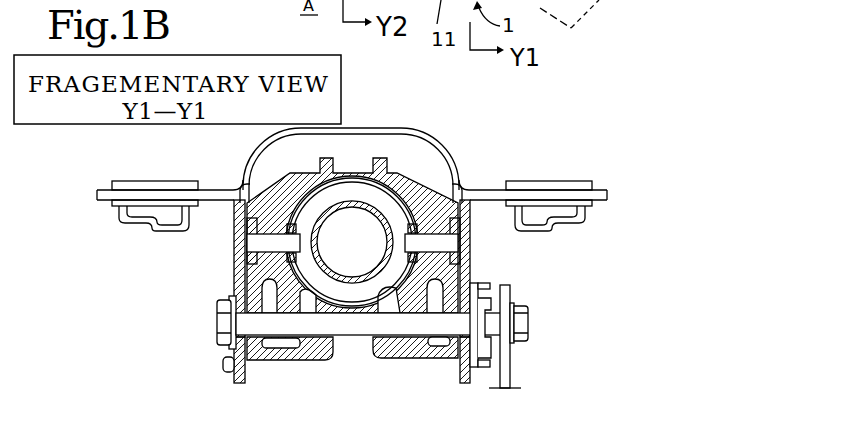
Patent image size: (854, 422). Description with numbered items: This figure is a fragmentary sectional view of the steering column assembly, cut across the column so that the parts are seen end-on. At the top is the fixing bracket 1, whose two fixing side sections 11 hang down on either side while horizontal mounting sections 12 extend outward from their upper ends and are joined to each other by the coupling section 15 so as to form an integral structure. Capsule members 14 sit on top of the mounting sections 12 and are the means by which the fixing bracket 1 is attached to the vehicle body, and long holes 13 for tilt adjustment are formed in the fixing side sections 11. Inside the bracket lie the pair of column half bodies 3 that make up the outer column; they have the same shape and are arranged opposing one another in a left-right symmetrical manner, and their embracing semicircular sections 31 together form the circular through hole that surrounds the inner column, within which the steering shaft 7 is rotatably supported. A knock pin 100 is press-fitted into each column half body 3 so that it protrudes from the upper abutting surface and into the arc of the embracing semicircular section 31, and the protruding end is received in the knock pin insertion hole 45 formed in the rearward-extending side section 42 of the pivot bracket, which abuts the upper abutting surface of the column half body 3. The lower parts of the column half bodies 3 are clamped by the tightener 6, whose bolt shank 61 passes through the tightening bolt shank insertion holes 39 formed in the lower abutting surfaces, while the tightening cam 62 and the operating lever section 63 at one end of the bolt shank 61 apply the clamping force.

The fixing bracket 1 is at (438, 140).
The column half body 3 is at (272, 180).
The tightener 6 is at (535, 322).
The steering shaft 7 is at (363, 163).
The fixing side section 11 is at (237, 270).
The mounting section 12 is at (205, 188).
The long hole 13 is at (241, 371).
The capsule member 14 is at (140, 180).
The coupling section 15 is at (386, 128).
The embracing semicircular section 31 is at (333, 297).
The tightening bolt shank insertion hole 39 is at (225, 318).
The rearward-extending side section 42 is at (247, 187).
The knock pin insertion hole 45 is at (260, 238).
The bolt shank 61 is at (357, 337).
The tightening cam 62 is at (480, 286).
The operating lever section 63 is at (513, 376).
The knock pin 100 is at (257, 229).